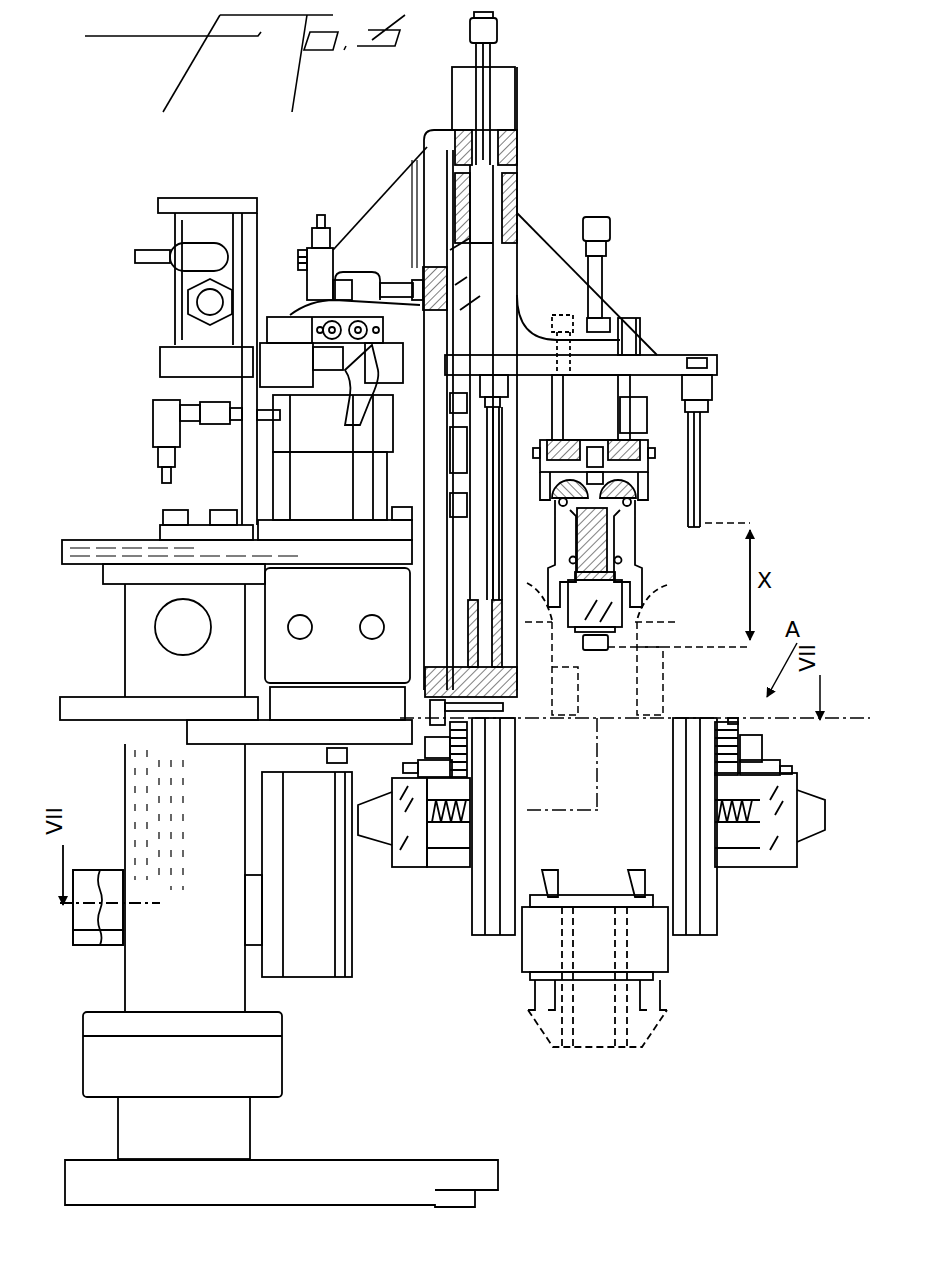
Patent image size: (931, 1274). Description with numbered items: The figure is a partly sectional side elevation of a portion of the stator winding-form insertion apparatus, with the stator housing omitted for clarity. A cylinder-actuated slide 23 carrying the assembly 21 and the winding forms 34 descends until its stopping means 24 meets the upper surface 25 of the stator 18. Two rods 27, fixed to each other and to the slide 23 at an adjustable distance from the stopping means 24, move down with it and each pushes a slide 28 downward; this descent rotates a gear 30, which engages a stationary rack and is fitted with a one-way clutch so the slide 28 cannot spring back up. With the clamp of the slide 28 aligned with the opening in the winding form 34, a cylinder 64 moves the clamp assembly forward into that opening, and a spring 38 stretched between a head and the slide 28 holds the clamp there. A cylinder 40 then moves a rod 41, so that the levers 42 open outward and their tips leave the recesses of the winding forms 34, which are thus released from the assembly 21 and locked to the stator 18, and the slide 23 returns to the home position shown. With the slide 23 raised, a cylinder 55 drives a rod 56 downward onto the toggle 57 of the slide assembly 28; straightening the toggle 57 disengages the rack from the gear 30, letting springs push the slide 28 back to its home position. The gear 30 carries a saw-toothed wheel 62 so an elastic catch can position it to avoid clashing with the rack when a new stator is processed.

The stator 18 is at (650, 960).
The assembly 21 is at (357, 187).
The slide 23 is at (505, 282).
The stopping means 24 is at (592, 650).
The upper surface 25 is at (595, 895).
The rods 27 is at (700, 490).
The slide 28 is at (495, 935).
The gear 30 is at (470, 745).
The winding form 34 is at (552, 607).
The spring 38 is at (455, 825).
The cylinder 40 is at (602, 433).
The rod 41 is at (625, 550).
The levers 42 is at (630, 537).
The cylinder 55 is at (500, 95).
The rod 56 is at (447, 712).
The toggle 57 is at (445, 795).
The saw-toothed wheel 62 is at (437, 728).
The cylinder 64 is at (97, 870).